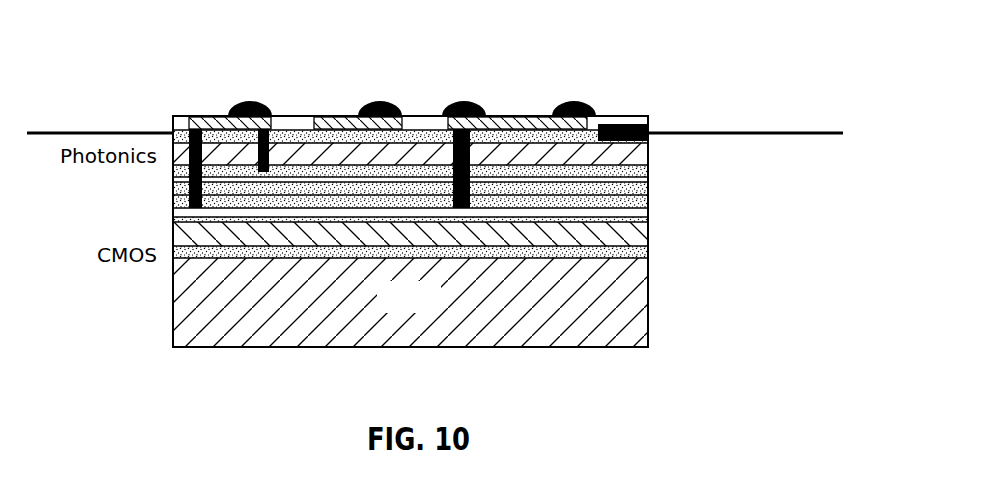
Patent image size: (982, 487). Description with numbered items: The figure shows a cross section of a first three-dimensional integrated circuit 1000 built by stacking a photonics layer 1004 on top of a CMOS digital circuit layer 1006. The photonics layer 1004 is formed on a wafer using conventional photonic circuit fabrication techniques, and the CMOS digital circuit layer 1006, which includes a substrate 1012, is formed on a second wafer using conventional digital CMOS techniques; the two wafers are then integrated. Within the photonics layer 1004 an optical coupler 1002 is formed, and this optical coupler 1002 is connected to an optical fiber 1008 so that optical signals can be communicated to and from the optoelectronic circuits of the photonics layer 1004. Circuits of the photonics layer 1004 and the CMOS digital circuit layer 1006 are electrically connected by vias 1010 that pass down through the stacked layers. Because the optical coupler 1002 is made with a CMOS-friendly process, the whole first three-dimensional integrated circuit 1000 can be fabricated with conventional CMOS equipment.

The first three-dimensional integrated circuit 1000 is at (443, 179).
The optical coupler 1002 is at (651, 112).
The photonics layer 1004 is at (663, 118).
The CMOS digital circuit layer 1006 is at (451, 273).
The optical fiber 1008 is at (763, 132).
The vias 1010 is at (189, 150).
The substrate 1012 is at (437, 310).